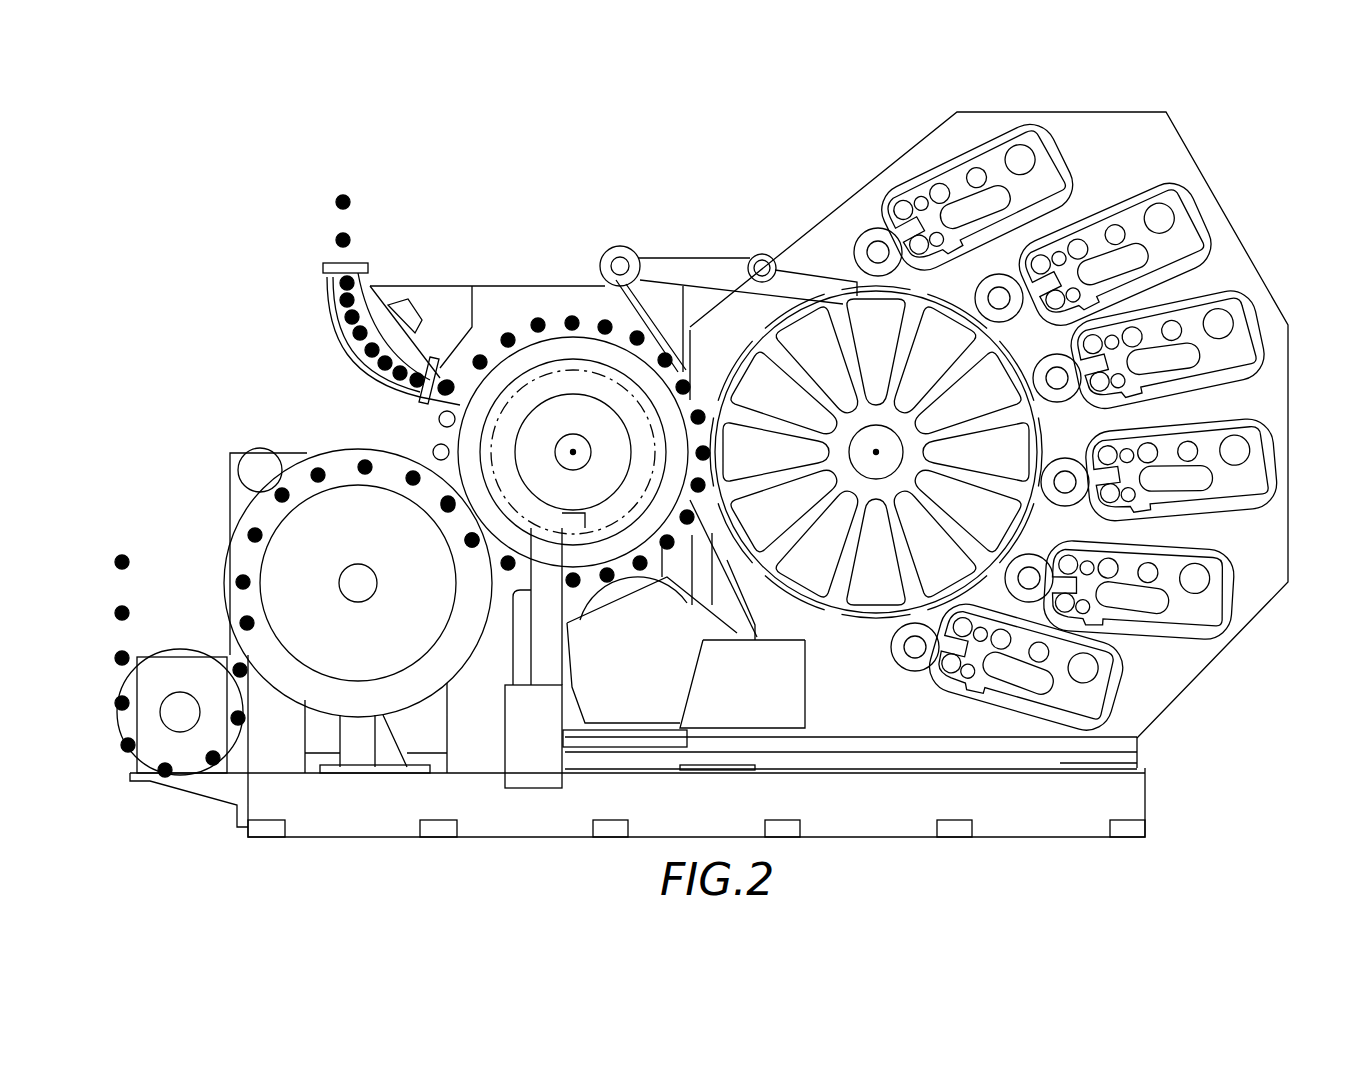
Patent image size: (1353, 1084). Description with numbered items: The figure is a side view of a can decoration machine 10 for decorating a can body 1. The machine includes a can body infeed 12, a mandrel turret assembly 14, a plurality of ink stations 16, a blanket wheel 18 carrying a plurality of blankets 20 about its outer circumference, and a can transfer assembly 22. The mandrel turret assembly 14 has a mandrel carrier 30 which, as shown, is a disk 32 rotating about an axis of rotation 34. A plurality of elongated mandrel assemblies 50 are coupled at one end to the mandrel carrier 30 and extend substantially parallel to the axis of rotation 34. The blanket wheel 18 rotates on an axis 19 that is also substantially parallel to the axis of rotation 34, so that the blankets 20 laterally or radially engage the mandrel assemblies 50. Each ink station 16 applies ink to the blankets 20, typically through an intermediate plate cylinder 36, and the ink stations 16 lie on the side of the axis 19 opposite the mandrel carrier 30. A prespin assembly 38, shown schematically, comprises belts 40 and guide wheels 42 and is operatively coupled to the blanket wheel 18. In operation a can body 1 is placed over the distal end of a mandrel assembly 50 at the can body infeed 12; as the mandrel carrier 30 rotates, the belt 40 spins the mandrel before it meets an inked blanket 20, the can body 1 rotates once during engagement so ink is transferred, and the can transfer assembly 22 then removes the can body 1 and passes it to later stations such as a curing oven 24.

The can body 1 is at (345, 198).
The can decoration machine 10 is at (640, 190).
The can body infeed 12 is at (325, 290).
The mandrel turret assembly 14 is at (528, 360).
The ink stations 16 is at (1032, 160).
The blanket wheel 18 is at (876, 607).
The blanket wheel axis of rotation 19 is at (876, 452).
The blankets 20 is at (767, 587).
The can transfer assembly 22 is at (468, 584).
The curing oven 24 is at (212, 437).
The mandrel carrier 30 is at (607, 355).
The disk 32 is at (555, 355).
The mandrel carrier axis of rotation 34 is at (573, 452).
The plate cylinder 36 is at (856, 248).
The prespin assembly 38 is at (760, 254).
The belt 40 is at (690, 258).
The guide wheels 42 is at (605, 256).
The mandrel assemblies 50 is at (440, 421).